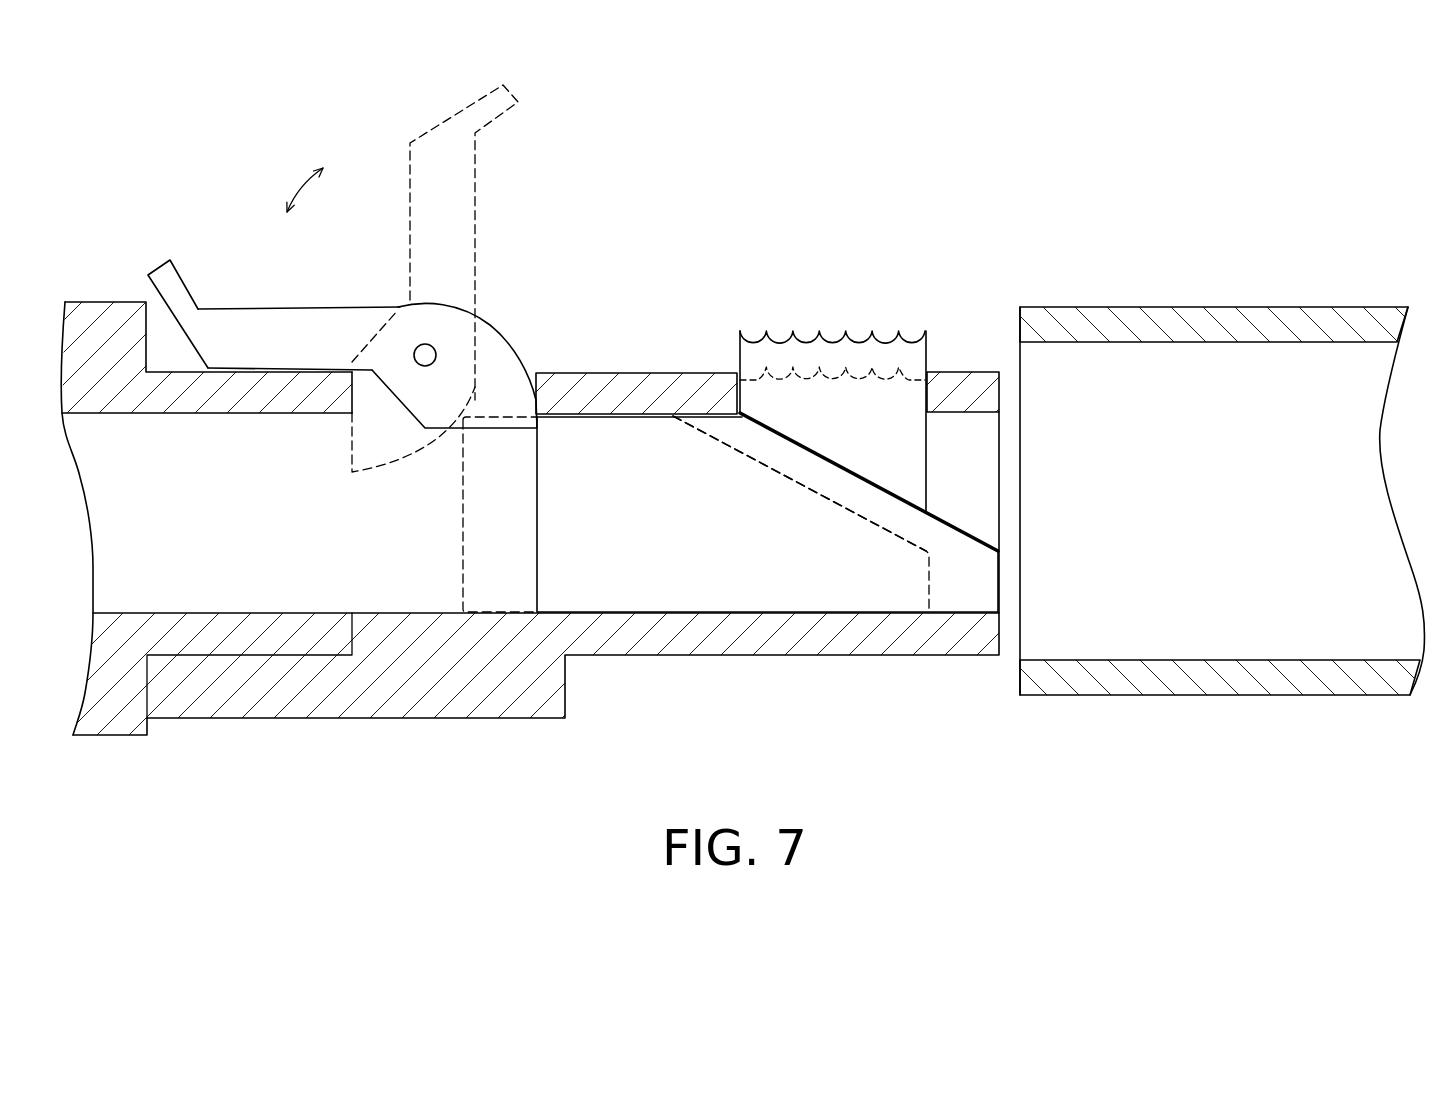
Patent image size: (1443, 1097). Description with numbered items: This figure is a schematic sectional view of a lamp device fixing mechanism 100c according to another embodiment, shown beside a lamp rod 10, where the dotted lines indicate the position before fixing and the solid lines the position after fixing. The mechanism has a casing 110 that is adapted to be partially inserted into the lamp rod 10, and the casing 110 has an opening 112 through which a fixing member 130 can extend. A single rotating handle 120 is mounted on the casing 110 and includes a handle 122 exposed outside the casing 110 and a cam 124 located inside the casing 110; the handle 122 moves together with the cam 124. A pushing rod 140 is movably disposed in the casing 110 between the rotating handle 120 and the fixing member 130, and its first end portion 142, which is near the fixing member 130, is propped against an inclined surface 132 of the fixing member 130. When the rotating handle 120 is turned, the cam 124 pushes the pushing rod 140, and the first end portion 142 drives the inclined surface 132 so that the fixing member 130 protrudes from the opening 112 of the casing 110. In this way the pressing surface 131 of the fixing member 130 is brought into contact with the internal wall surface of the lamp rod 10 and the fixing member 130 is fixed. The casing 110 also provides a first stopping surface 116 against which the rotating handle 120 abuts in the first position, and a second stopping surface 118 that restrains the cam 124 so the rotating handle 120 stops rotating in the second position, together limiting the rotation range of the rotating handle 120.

The lamp device fixing mechanism 100c is at (605, 426).
The lamp rod 10 is at (1183, 327).
The casing 110 is at (608, 647).
The opening 112 is at (733, 355).
The first stopping surface 116 is at (362, 392).
The second stopping surface 118 is at (526, 402).
The rotating handle 120 is at (278, 325).
The handle 122 is at (167, 283).
The cam 124 is at (534, 400).
The fixing member 130 is at (907, 448).
The pressing surface 131 is at (807, 337).
The inclined surface 132 is at (867, 480).
The pushing rod 140 is at (708, 572).
The first end portion 142 is at (947, 517).